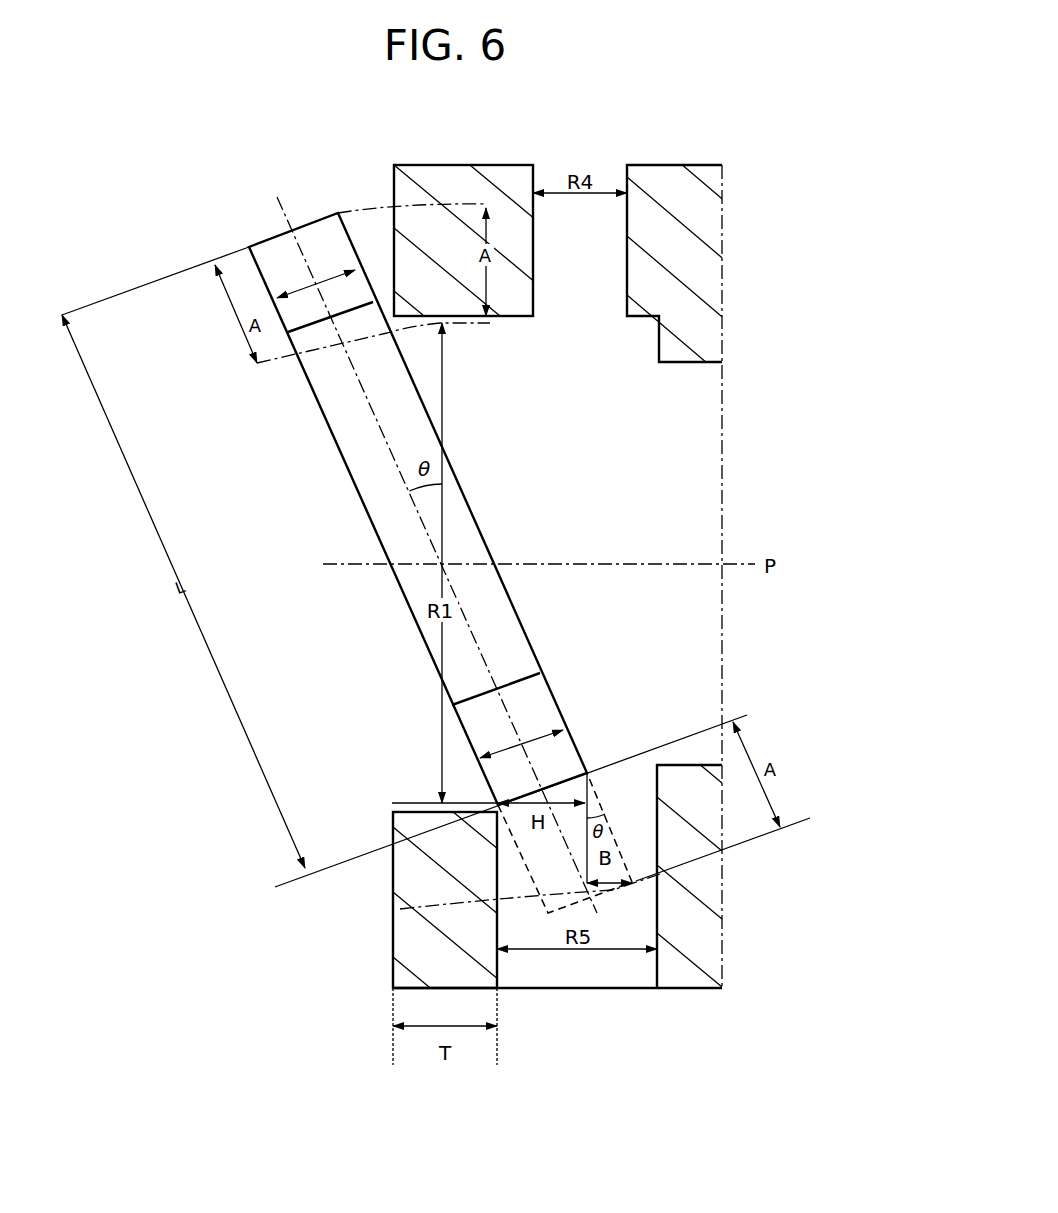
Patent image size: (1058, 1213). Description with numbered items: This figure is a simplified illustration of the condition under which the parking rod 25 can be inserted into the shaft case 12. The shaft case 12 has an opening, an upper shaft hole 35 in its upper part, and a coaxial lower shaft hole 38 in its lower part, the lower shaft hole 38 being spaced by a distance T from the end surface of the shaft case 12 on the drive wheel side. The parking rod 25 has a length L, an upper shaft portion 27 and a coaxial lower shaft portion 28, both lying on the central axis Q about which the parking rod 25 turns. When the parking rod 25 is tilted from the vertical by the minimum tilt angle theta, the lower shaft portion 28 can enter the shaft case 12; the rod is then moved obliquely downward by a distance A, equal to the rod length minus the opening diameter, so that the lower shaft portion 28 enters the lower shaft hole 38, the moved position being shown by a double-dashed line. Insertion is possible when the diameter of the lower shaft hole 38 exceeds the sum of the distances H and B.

The shaft case 12 is at (682, 165).
The parking rod 25 is at (478, 506).
The upper shaft portion 27 is at (345, 255).
The lower shaft portion 28 is at (553, 699).
The upper shaft hole 35 is at (627, 214).
The lower shaft hole 38 is at (648, 908).